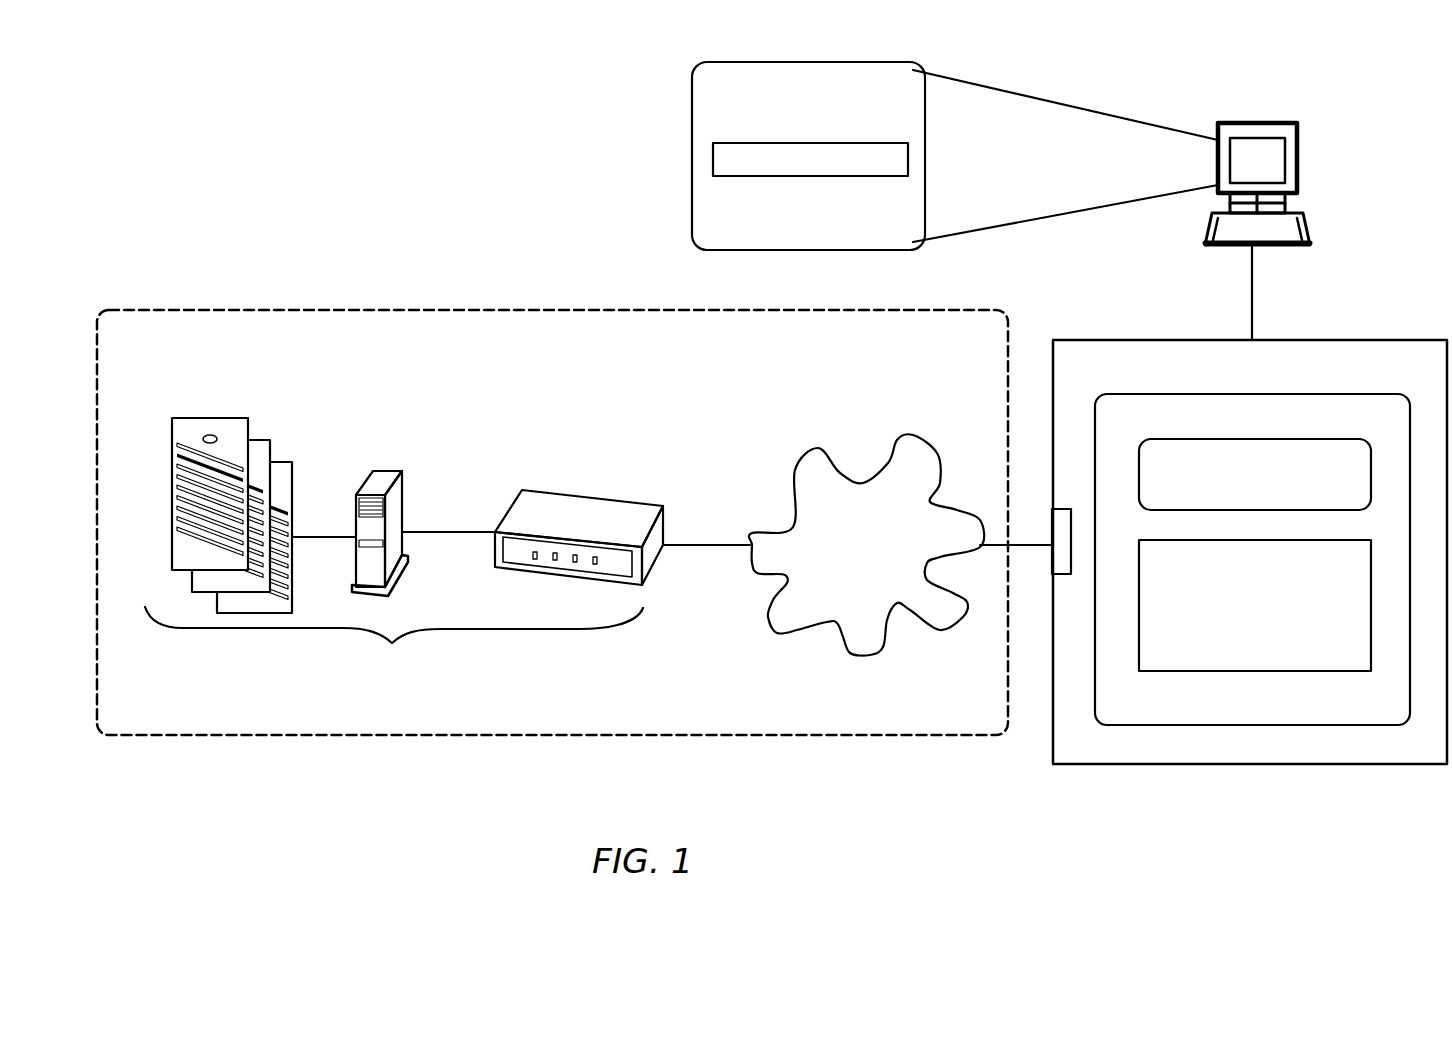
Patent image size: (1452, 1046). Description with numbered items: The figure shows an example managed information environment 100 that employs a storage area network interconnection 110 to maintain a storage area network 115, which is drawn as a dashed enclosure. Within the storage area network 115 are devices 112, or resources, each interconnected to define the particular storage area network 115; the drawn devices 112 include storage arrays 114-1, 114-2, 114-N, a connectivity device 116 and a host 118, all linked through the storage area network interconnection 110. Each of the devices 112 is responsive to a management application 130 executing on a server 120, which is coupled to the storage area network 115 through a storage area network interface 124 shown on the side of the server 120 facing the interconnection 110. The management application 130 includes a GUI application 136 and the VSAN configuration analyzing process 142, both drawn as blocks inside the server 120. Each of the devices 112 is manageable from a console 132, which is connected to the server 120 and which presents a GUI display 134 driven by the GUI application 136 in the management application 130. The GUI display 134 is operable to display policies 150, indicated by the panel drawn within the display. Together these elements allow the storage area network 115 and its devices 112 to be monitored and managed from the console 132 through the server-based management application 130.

The managed information environment 100 is at (400, 235).
The storage area network interconnection 110 is at (777, 633).
The devices 112 is at (392, 645).
The storage array 114-1 is at (215, 417).
The storage array 114-2 is at (270, 438).
The storage array 114-N is at (294, 462).
The storage area network 115 is at (550, 735).
The connectivity device 116 is at (402, 473).
The host 118 is at (668, 530).
The server 120 is at (1048, 763).
The storage area network interface 124 is at (1047, 558).
The management application 130 is at (1093, 693).
The console 132 is at (1310, 243).
The GUI display 134 is at (698, 72).
The GUI application 136 is at (1138, 474).
The VSAN configuration analyzing process 142 is at (1312, 668).
The policies 150 is at (760, 176).